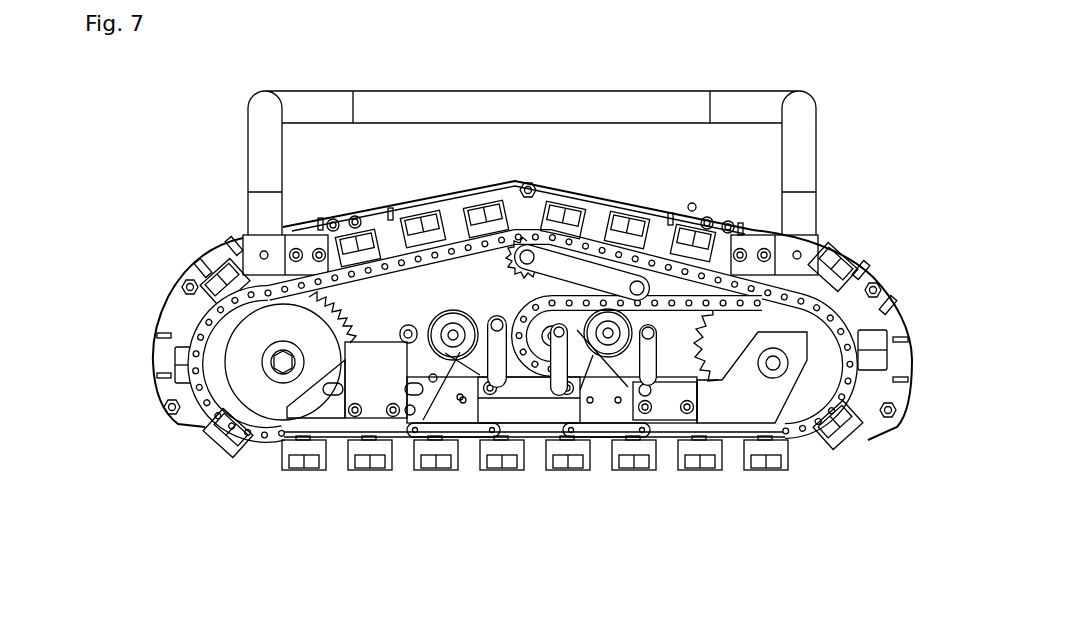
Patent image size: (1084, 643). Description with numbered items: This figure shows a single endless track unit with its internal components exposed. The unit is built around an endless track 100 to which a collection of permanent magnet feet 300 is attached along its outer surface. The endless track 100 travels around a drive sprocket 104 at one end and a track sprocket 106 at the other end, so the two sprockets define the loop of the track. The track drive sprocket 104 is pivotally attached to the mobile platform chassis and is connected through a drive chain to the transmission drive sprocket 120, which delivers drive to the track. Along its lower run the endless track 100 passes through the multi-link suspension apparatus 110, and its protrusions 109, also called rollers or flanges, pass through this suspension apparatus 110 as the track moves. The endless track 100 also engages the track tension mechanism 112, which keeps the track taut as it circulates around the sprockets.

The endless track 100 is at (807, 438).
The drive sprocket 104 is at (840, 430).
The track sprocket 106 is at (238, 362).
The protrusions 109 is at (252, 420).
The multi-link suspension apparatus 110 is at (537, 428).
The track tension mechanism 112 is at (572, 260).
The transmission drive sprocket 120 is at (543, 352).
The permanent magnet feet 300 is at (433, 472).